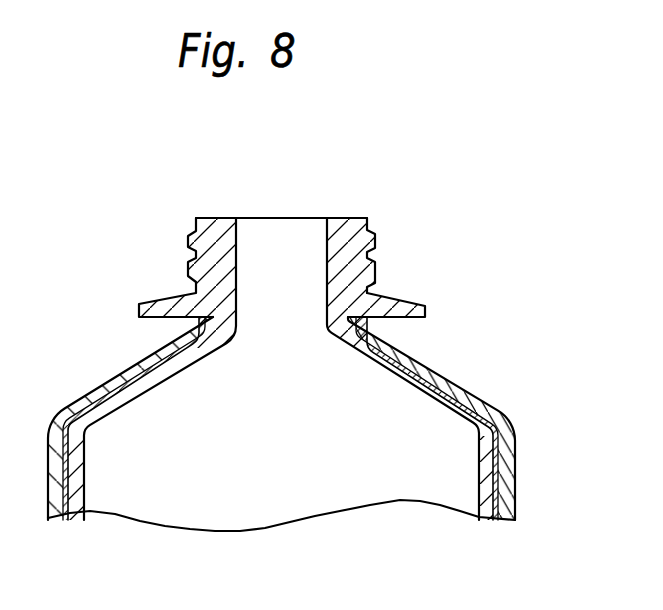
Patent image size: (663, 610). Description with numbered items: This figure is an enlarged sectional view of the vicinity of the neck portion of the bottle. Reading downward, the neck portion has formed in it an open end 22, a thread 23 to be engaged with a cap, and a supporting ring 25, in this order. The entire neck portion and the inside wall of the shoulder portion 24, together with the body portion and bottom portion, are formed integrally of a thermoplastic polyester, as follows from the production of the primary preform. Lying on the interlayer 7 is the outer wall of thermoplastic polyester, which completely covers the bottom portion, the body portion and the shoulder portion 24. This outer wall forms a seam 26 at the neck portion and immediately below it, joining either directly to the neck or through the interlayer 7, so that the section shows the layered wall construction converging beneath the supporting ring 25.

The open end 22 is at (352, 217).
The thread 23 is at (377, 237).
The supporting ring 25 is at (415, 304).
The shoulder portion 24 is at (458, 375).
The seam 26 is at (393, 342).
The interlayer 7 is at (515, 453).